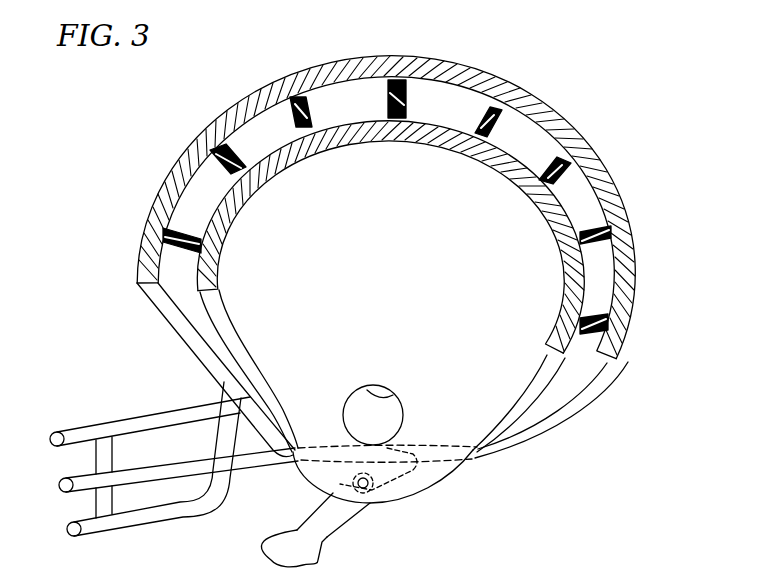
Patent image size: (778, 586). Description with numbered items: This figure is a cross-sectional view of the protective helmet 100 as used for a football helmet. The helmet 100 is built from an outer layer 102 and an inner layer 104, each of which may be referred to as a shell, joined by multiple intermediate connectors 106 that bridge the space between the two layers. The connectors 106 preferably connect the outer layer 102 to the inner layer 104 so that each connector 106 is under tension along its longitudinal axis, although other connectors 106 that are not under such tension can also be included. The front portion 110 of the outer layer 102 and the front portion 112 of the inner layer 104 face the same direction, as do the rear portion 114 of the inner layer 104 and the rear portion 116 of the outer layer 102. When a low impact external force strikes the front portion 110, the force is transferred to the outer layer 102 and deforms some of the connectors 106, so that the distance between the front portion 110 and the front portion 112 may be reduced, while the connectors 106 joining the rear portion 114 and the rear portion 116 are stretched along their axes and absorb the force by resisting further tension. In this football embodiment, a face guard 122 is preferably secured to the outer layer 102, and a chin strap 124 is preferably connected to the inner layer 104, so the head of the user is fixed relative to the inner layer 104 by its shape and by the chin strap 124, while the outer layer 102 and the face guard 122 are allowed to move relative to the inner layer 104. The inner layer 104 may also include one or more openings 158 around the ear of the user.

The protective helmet 100 is at (159, 136).
The outer layer 102 is at (160, 190).
The inner layer 104 is at (257, 180).
The intermediate connectors 106 is at (293, 98).
The front portion of outer layer 110 is at (157, 320).
The front portion of inner layer 112 is at (237, 287).
The rear portion of inner layer 114 is at (563, 262).
The rear portion of outer layer 116 is at (633, 290).
The face guard 122 is at (173, 417).
The chin strap 124 is at (320, 533).
The opening 158 is at (375, 392).